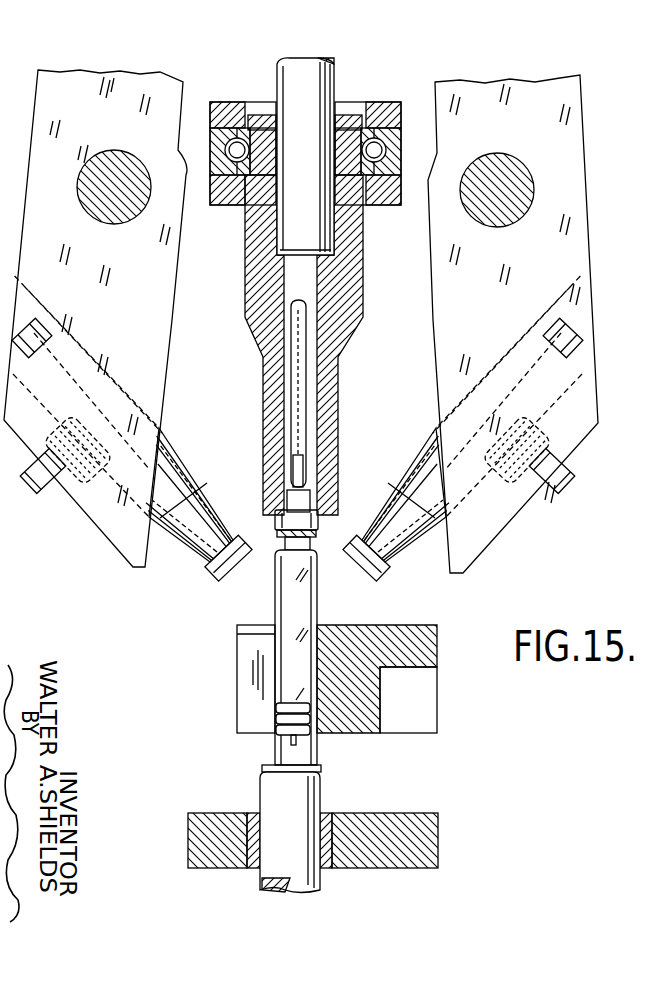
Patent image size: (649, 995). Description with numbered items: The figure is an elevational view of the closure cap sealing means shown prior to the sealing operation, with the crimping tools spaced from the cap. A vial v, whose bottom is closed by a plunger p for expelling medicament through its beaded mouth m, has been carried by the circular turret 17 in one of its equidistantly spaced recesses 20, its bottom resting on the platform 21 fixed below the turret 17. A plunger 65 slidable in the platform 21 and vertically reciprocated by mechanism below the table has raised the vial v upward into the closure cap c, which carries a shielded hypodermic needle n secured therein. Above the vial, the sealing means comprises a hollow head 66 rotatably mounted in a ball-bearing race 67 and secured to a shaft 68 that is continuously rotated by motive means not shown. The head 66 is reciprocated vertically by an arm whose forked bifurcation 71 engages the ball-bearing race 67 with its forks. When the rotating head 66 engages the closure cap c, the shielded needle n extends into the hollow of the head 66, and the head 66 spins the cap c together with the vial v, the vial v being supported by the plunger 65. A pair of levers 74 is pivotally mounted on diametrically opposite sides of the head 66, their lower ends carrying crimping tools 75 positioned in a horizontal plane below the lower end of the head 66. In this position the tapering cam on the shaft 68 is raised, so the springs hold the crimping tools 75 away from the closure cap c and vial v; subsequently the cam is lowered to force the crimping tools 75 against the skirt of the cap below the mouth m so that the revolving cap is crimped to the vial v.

The shaft 68 is at (299, 70).
The forked bifurcation 71 is at (223, 104).
The ball-bearing race 67 is at (403, 142).
The levers 74 is at (506, 85).
The hollow head 66 is at (362, 282).
The shielded hypodermic needle n is at (312, 390).
The closure cap c is at (275, 520).
The beaded mouth m is at (319, 532).
The crimping tools 75 is at (214, 572).
The vial v is at (320, 595).
The circular turret 17 is at (413, 632).
The recesses 20 is at (240, 667).
The plunger p is at (276, 720).
The plunger 65 is at (270, 790).
The platform 21 is at (428, 845).